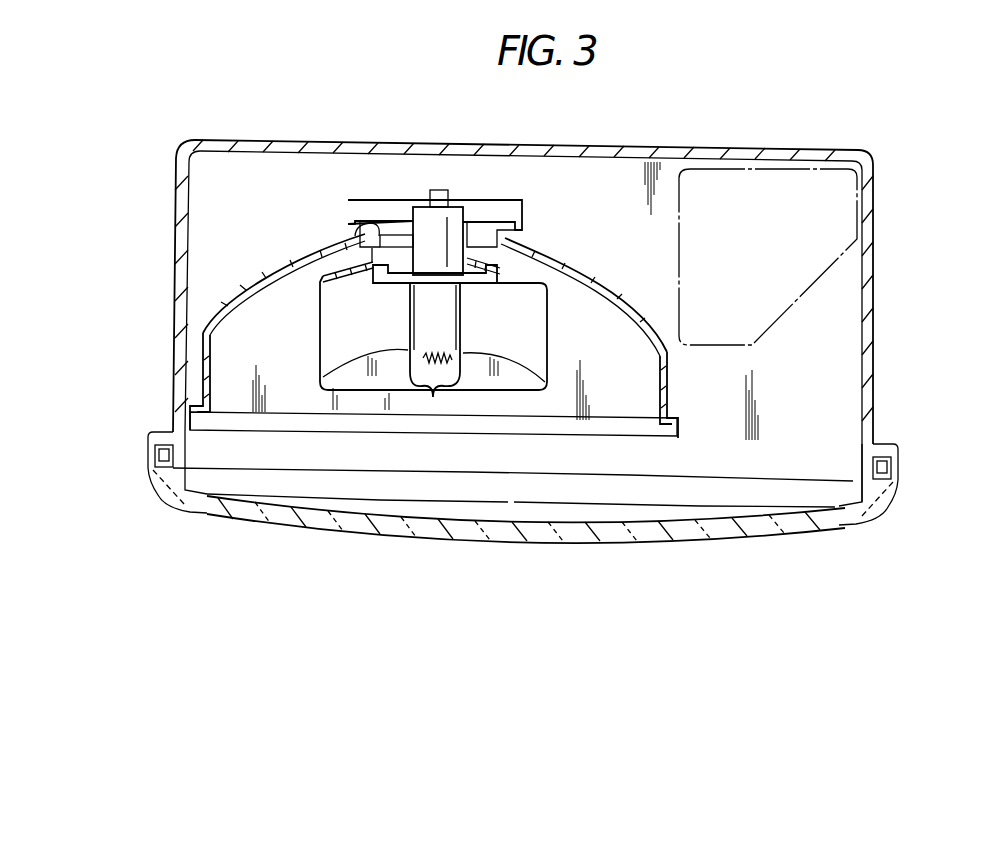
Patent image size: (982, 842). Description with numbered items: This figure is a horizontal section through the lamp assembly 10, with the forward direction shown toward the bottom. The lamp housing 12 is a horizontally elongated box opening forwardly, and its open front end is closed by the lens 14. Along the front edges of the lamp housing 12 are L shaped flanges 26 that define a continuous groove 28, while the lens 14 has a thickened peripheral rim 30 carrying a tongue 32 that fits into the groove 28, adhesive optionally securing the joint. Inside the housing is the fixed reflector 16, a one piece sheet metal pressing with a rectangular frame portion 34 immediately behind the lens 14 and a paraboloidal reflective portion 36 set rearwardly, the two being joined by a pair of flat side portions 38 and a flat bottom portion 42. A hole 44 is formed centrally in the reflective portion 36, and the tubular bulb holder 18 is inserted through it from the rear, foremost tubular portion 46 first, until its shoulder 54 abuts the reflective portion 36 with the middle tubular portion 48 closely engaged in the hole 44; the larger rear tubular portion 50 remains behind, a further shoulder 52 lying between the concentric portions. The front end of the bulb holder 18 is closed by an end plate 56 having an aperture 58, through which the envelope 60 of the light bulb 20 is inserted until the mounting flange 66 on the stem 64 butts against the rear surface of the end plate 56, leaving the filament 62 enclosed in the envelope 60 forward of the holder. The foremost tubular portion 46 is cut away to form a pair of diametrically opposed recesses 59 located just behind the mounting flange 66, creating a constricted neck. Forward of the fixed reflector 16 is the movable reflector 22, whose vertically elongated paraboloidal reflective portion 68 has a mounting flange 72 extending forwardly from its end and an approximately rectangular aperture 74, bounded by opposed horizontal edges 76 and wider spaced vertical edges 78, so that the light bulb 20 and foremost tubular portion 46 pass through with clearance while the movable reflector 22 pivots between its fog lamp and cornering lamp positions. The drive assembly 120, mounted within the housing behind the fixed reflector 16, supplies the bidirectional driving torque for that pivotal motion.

The lamp assembly 10 is at (884, 126).
The lamp housing 12 is at (875, 297).
The lens 14 is at (774, 531).
The fixed reflector 16 is at (592, 268).
The bulb holder 18 is at (466, 193).
The light bulb 20 is at (458, 384).
The movable reflector 22 is at (312, 367).
The L shaped flanges 26 is at (152, 432).
The groove 28 is at (150, 449).
The peripheral rim 30 is at (150, 482).
The tongue 32 is at (150, 463).
The frame portion 34 is at (467, 427).
The reflective portion 36 is at (648, 322).
The side portions 38 is at (209, 393).
The bottom portion 42 is at (617, 400).
The hole 44 is at (380, 222).
The foremost tubular portion 46 is at (497, 284).
The middle tubular portion 48 is at (505, 237).
The rear tubular portion 50 is at (526, 222).
The shoulder 52 is at (362, 236).
The shoulder 54 is at (355, 228).
The end plate 56 is at (396, 280).
The aperture 58 is at (420, 284).
The recesses 59 is at (478, 232).
The envelope 60 is at (465, 339).
The filament 62 is at (427, 366).
The stem 64 is at (427, 216).
The mounting flange 66 is at (495, 266).
The reflective portion 68 is at (337, 280).
The mounting flange 72 is at (343, 381).
The aperture 74 is at (483, 252).
The horizontal edges 76 is at (397, 222).
The vertical edges 78 is at (372, 265).
The drive assembly 120 is at (768, 169).